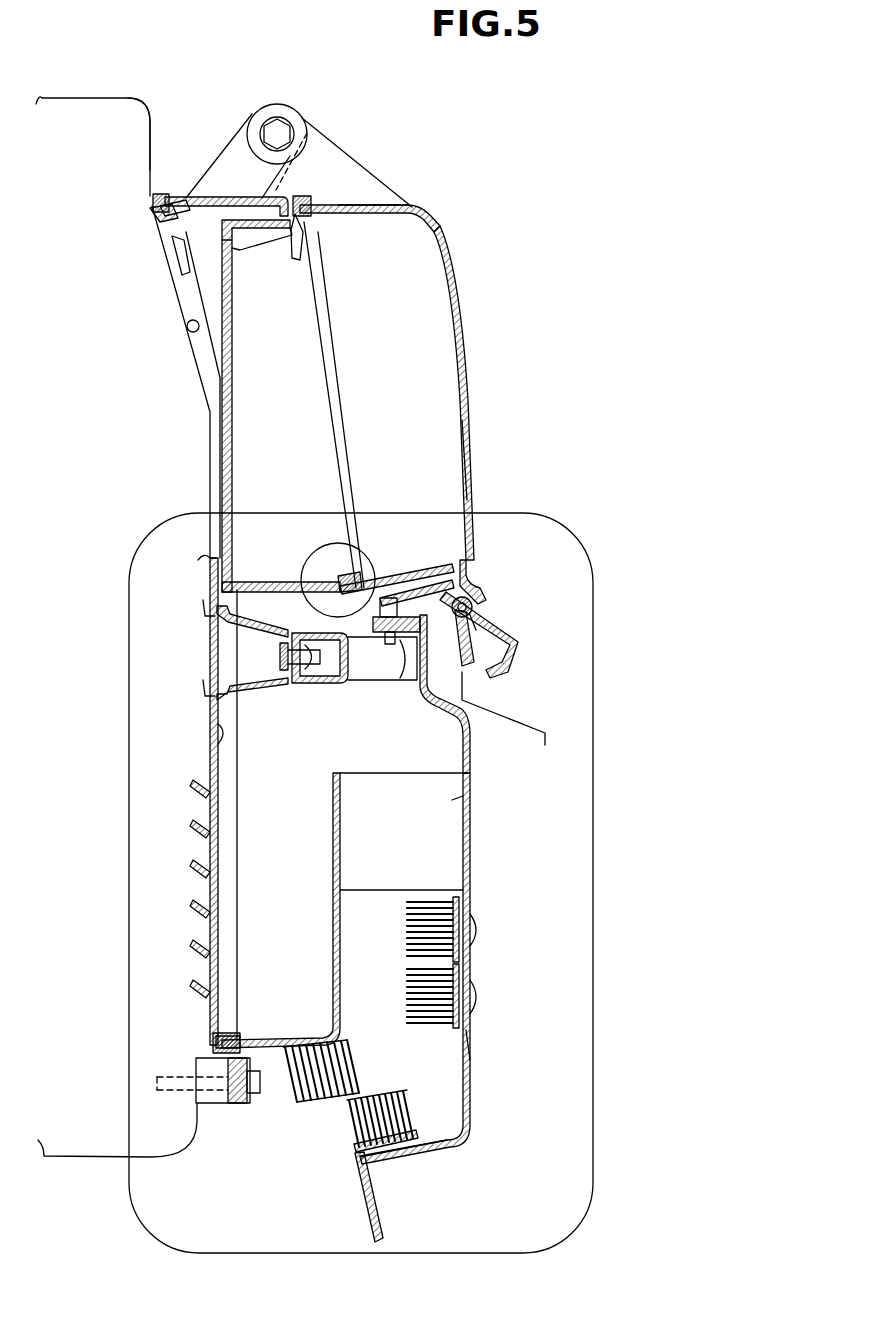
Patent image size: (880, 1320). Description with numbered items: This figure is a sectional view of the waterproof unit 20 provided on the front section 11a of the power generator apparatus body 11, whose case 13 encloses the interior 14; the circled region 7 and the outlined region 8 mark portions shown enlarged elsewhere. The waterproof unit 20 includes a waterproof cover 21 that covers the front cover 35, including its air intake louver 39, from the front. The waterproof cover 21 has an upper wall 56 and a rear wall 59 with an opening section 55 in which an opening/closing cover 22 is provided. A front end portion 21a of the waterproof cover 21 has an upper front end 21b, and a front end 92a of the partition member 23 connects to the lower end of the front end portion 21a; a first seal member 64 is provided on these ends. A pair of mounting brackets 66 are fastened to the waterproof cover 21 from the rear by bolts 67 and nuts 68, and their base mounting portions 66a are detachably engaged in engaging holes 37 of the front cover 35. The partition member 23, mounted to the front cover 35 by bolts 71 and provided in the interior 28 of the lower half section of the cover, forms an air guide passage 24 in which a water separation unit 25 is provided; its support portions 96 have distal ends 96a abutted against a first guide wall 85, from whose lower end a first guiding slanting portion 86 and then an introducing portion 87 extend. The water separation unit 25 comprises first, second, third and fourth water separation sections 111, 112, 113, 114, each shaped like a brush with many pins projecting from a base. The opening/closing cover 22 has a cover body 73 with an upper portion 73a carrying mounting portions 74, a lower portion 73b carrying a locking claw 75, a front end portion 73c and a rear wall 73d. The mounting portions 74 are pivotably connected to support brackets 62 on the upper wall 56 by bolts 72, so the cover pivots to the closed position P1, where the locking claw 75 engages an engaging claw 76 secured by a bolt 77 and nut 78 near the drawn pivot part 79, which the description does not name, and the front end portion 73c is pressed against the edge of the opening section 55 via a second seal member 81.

The enlarged portion indicator 7 is at (322, 555).
The enlarged region indicator 8 is at (594, 700).
The power generator apparatus body 11 is at (78, 88).
The front section 11a is at (195, 330).
The case 13 is at (105, 97).
The interior 14 is at (38, 826).
The waterproof unit 20 is at (487, 208).
The waterproof cover 21 is at (480, 870).
The front end portion 21a is at (188, 196).
The upper front end 21b is at (170, 196).
The opening/closing cover 22 is at (490, 300).
The partition member 23 is at (330, 852).
The air guide passage 24 is at (476, 826).
The water separation unit 25 is at (430, 1100).
The interior 28 is at (268, 918).
The front cover 35 is at (210, 722).
The engaging holes 37 is at (205, 615).
The air intake louver 39 is at (200, 895).
The opening section 55 is at (350, 578).
The upper wall 56 is at (262, 190).
The rear wall 59 is at (478, 1040).
The support brackets 62 is at (232, 150).
The first seal member 64 is at (155, 212).
The mounting brackets 66 is at (258, 612).
The base mounting portions 66a is at (205, 608).
The bolts 67 is at (282, 666).
The nuts 68 is at (308, 684).
The bolts 71 is at (254, 1095).
The bolts 72 is at (278, 134).
The cover body 73 is at (490, 368).
The upper portion 73a is at (385, 205).
The lower portion 73b is at (470, 558).
The front end portion 73c is at (306, 206).
The rear wall 73d is at (475, 412).
The mounting portions 74 is at (360, 196).
The locking claw 75 is at (500, 635).
The engaging claw 76 is at (430, 585).
The bolt 77 is at (395, 585).
The nut 78 is at (398, 645).
The pivot 79 is at (475, 600).
The second seal member 81 is at (300, 235).
The first guide wall 85 is at (476, 964).
The first guiding slanting portion 86 is at (430, 1152).
The introducing portion 87 is at (368, 1205).
The front end 92a is at (240, 1036).
The support portions 96 is at (400, 798).
The distal ends 96a is at (455, 797).
The first water separation section 111 is at (410, 1115).
The second water separation section 112 is at (352, 1065).
The third water separation section 113 is at (407, 945).
The fourth water separation section 114 is at (407, 1002).
The closed position P1 is at (511, 720).